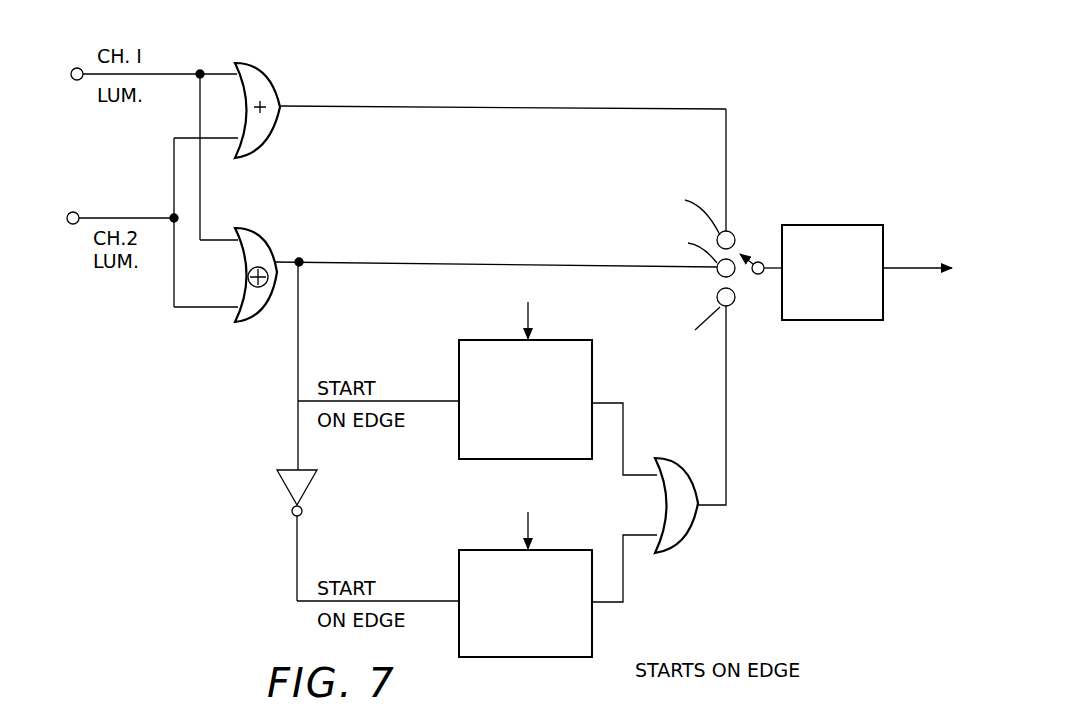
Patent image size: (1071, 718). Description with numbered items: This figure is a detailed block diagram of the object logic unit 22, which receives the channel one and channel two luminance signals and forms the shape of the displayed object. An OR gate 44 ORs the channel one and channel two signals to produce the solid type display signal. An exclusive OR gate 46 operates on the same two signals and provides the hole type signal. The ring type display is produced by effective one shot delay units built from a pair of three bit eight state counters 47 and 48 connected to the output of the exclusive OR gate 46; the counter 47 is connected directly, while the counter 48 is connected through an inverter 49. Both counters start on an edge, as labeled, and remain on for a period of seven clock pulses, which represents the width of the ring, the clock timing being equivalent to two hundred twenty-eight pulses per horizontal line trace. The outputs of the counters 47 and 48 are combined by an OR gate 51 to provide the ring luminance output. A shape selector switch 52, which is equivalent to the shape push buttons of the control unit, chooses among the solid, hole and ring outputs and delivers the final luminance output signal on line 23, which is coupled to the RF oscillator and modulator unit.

The object logic unit 22 is at (415, 80).
The line 23 is at (912, 273).
The OR gate 44 is at (267, 148).
The exclusive OR gate 46 is at (247, 322).
The three bit eight state counter 47 is at (482, 338).
The three bit eight state counter 48 is at (592, 620).
The inverter 49 is at (290, 493).
The OR gate 51 is at (685, 469).
The shape selector switch 52 is at (762, 275).